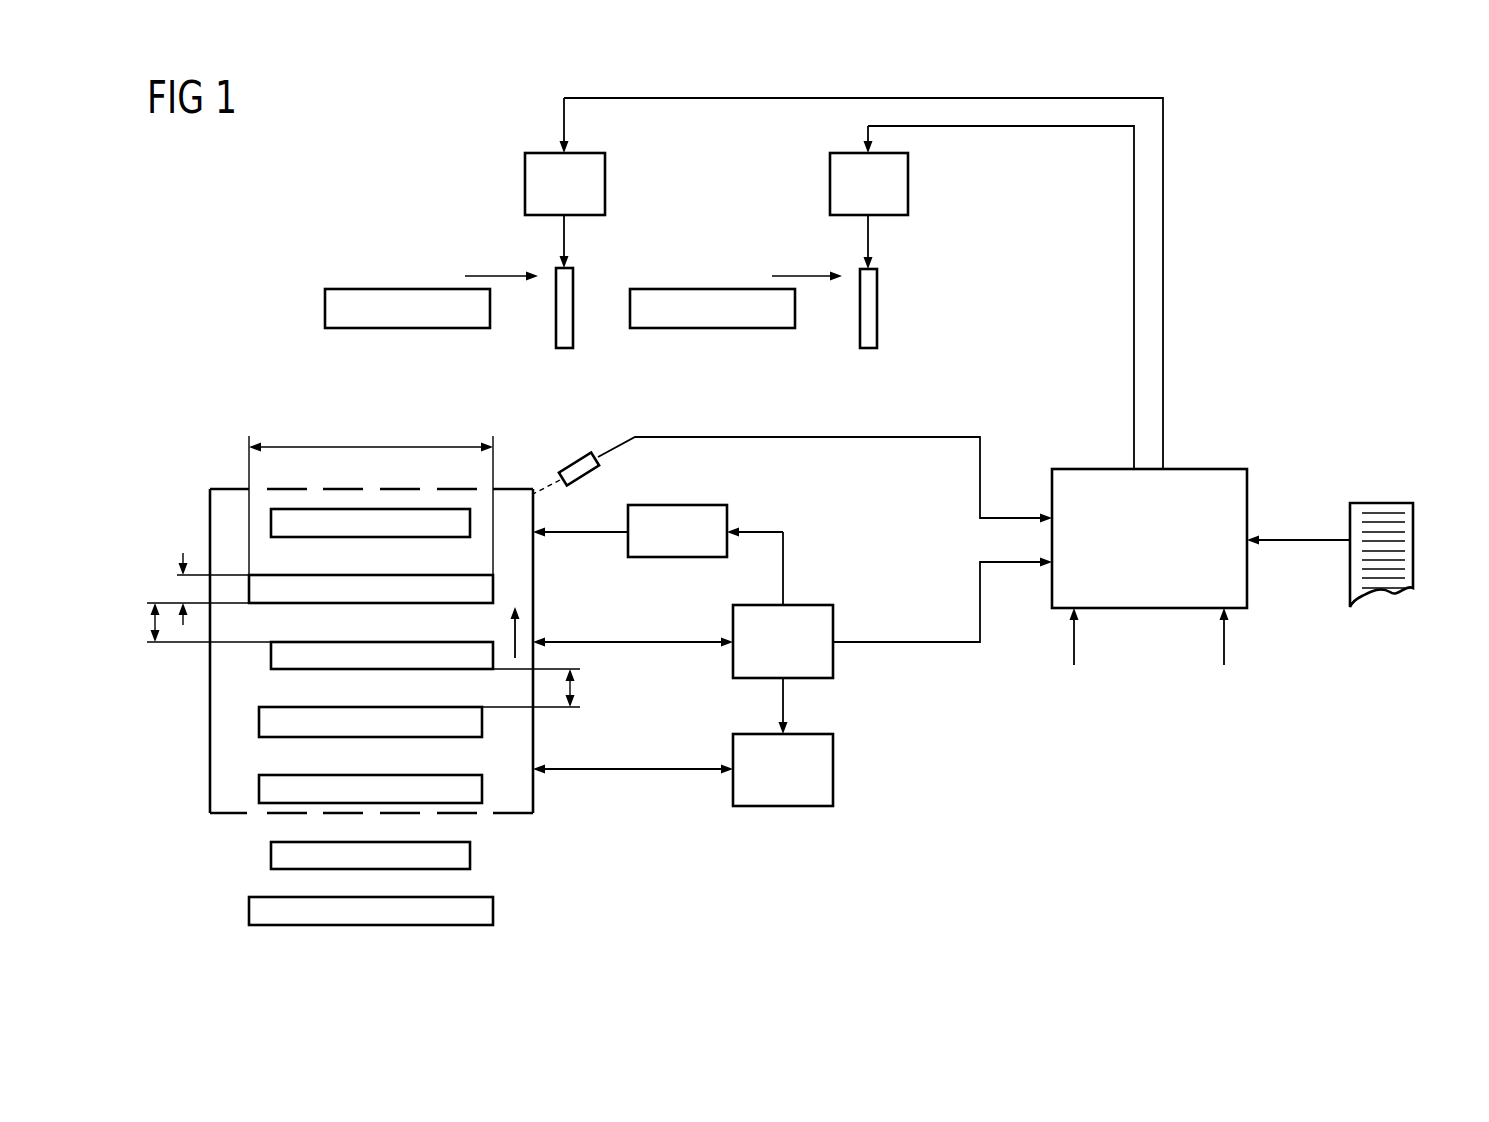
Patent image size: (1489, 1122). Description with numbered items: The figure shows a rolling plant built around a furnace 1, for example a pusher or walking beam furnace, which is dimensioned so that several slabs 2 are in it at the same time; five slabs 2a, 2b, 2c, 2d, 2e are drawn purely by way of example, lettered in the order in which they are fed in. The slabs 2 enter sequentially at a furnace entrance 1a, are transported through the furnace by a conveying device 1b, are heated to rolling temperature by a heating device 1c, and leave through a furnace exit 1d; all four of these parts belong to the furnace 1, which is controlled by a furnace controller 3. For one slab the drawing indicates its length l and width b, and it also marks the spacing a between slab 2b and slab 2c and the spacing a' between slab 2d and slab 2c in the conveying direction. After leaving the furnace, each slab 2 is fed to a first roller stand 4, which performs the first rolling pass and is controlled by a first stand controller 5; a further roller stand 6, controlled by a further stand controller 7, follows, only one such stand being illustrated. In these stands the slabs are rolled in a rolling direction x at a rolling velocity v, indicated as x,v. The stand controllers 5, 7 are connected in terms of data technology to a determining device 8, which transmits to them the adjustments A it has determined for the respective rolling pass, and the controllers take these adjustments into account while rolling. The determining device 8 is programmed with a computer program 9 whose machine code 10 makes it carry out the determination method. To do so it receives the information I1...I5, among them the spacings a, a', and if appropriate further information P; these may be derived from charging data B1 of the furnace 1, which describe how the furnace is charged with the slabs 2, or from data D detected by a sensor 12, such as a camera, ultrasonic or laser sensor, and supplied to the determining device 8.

The furnace 1 is at (210, 748).
The furnace entrance 1a is at (243, 817).
The conveying device 1b is at (667, 557).
The heating device 1c is at (783, 806).
The furnace exit 1d is at (230, 489).
The slabs 2 is at (400, 289).
The slab 2a is at (271, 525).
The slab 2b is at (493, 590).
The slab 2c is at (271, 653).
The slab 2d is at (259, 718).
The slab 2e is at (259, 783).
The furnace controller 3 is at (807, 605).
The first roller stand 4 is at (556, 335).
The first stand controller 5 is at (525, 173).
The further roller stand 6 is at (877, 305).
The further stand controller 7 is at (830, 173).
The determining device 8 is at (1212, 469).
The computer program 9 is at (1385, 503).
The machine code 10 is at (1400, 551).
The sensor 12 is at (573, 456).
The adjustment A is at (1134, 233).
The data D is at (918, 437).
The charging data B1 is at (918, 642).
The information P is at (1226, 650).
The information I1...I5 is at (1076, 650).
The spacing a is at (185, 615).
The spacing a' is at (557, 683).
The width b is at (177, 590).
The length l is at (357, 445).
The rolling direction and rolling velocity x,v is at (495, 276).